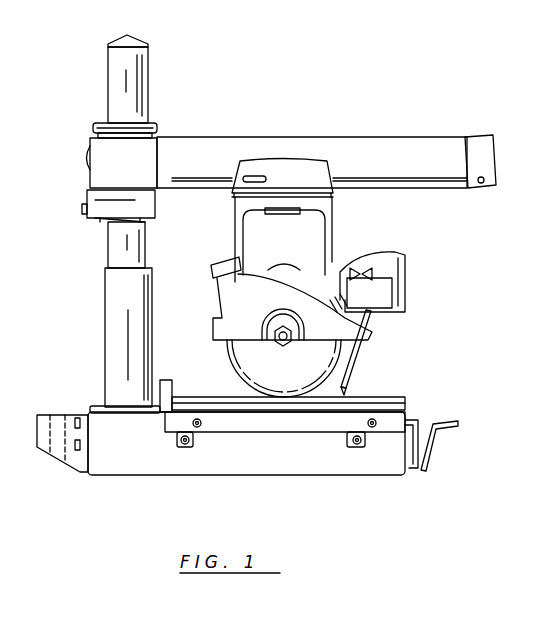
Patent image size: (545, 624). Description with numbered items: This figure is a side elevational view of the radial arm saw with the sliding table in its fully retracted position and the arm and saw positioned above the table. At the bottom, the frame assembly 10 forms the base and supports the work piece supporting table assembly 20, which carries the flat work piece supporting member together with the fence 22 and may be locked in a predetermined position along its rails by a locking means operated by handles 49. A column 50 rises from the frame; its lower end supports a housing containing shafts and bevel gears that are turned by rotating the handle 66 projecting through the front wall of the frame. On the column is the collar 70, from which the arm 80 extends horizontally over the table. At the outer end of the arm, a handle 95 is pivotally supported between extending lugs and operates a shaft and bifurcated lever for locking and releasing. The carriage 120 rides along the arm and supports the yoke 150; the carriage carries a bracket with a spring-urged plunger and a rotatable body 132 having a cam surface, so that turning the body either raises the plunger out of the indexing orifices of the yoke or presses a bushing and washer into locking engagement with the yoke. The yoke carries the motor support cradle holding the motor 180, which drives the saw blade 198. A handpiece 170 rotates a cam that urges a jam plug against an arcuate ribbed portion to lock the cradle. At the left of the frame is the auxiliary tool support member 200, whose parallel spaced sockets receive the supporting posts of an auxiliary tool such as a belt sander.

The frame assembly 10 is at (336, 475).
The work piece supporting table assembly 20 is at (375, 396).
The fence 22 is at (166, 380).
The handle 49 is at (417, 419).
The column 50 is at (105, 308).
The handle 66 is at (437, 449).
The collar 70 is at (97, 222).
The arm 80 is at (362, 137).
The handle 95 is at (482, 153).
The carriage 120 is at (248, 202).
The body 132 is at (256, 175).
The yoke 150 is at (333, 215).
The handpiece 170 is at (406, 284).
The motor 180 is at (283, 268).
The saw blade 198 is at (300, 378).
The auxiliary tool support member 200 is at (40, 414).